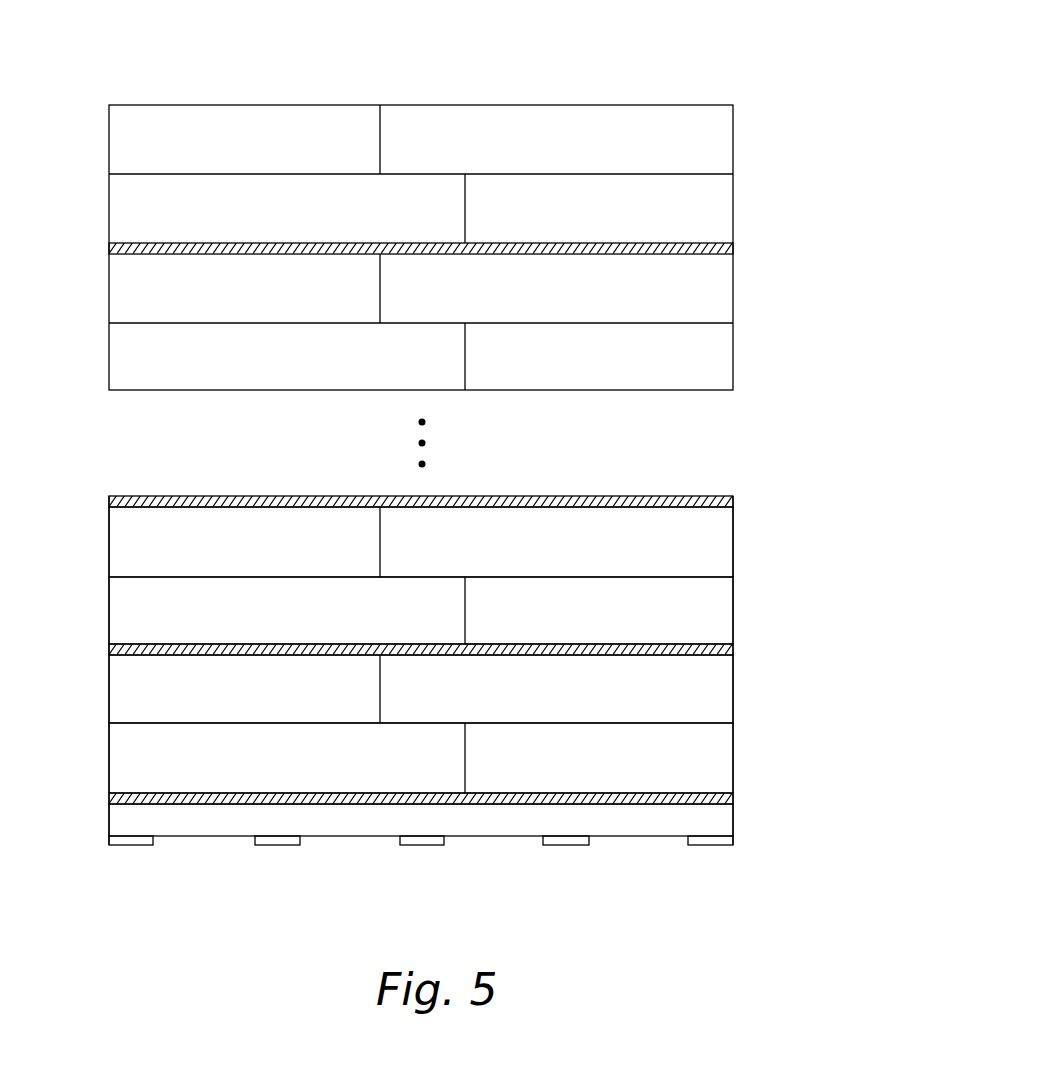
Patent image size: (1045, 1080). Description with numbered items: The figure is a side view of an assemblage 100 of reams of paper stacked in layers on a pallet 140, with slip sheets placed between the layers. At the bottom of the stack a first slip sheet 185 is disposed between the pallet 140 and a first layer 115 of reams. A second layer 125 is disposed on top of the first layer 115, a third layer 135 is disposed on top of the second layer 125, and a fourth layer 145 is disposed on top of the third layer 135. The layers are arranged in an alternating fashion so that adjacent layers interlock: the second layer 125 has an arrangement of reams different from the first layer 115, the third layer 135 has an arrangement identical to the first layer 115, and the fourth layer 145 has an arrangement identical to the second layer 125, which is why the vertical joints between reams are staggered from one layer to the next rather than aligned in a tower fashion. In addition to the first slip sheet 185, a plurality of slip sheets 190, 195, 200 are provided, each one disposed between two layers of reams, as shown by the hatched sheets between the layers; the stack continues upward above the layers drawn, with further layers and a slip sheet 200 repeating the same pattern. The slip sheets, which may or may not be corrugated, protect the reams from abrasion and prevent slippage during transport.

The assemblage 100 is at (403, 201).
The first layer 115 is at (730, 771).
The second layer 125 is at (730, 696).
The third layer 135 is at (730, 617).
The fourth layer 145 is at (730, 542).
The pallet 140 is at (467, 823).
The first slip sheet 185 is at (172, 793).
The slip sheet 190 is at (172, 644).
The slip sheet 195 is at (172, 496).
The slip sheet 200 is at (172, 243).